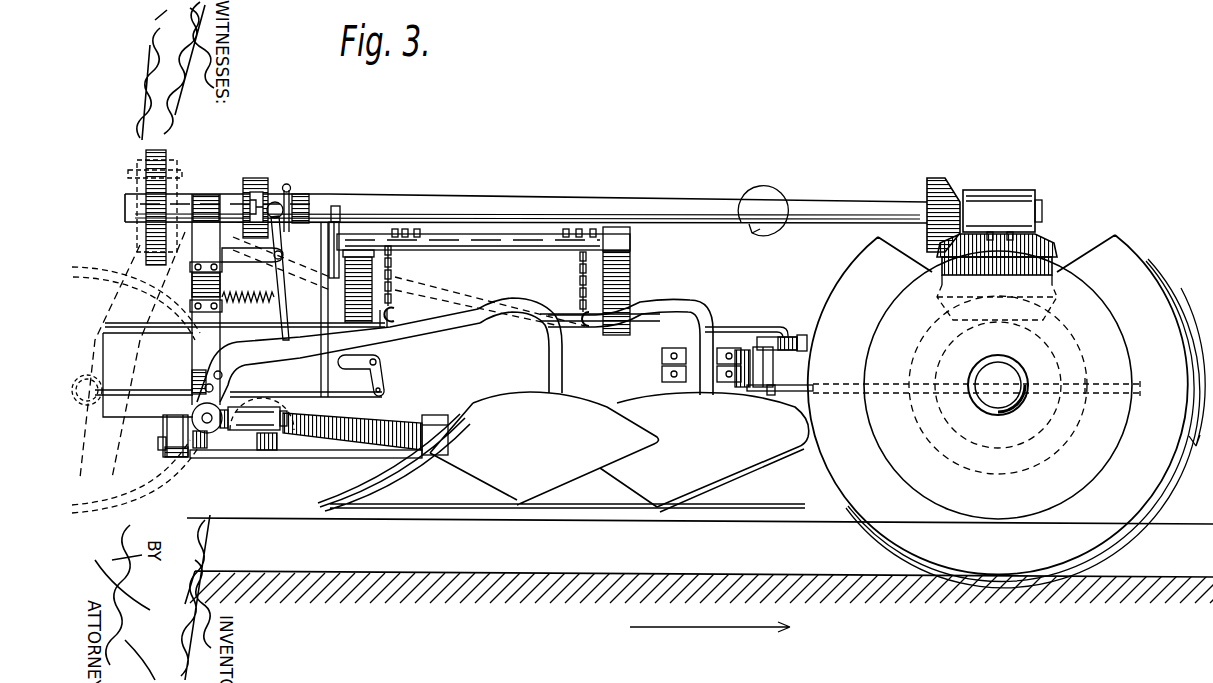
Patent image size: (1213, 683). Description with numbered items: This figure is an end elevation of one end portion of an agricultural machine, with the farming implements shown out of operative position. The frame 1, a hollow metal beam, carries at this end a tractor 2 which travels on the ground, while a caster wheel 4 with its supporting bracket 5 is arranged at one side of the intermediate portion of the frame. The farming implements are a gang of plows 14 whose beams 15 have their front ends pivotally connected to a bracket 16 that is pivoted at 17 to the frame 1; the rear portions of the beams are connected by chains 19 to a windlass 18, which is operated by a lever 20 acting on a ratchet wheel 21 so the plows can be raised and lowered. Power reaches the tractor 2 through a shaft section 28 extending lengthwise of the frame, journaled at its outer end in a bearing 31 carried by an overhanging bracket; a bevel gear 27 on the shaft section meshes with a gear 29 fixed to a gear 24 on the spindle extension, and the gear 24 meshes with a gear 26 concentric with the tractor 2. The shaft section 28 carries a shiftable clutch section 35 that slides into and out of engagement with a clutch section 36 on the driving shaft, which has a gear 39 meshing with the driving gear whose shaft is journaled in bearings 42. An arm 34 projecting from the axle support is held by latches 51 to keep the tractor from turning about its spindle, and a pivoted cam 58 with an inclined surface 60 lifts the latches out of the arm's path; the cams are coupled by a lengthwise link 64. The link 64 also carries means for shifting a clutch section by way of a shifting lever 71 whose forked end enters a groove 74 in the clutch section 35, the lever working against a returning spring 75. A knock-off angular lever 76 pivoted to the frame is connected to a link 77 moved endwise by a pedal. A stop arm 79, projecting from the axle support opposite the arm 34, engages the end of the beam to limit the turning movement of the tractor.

The frame 1 is at (336, 371).
The tractor 2 is at (1004, 411).
The caster wheel 4 is at (163, 492).
The supporting bracket 5 is at (137, 257).
The gang of plows 14 is at (648, 400).
The plow beams 15 is at (476, 320).
The bracket 16 is at (309, 455).
The pivot 17 is at (163, 457).
The windlass 18 is at (484, 250).
The chains 19 is at (395, 274).
The lever 20 is at (321, 371).
The ratchet wheel 21 is at (336, 228).
The gear 24 is at (1052, 303).
The gear 26 is at (1077, 364).
The bevel gear 27 is at (936, 178).
The shaft section 28 is at (678, 203).
The gear 29 is at (1050, 254).
The bearing 31 is at (1017, 190).
The arm 34 is at (798, 384).
The shiftable clutch section 35 is at (298, 194).
The clutch section 36 is at (249, 186).
The gear 39 is at (160, 160).
The bearings 42 is at (195, 283).
The latches 51 is at (773, 392).
The cam 58 is at (800, 335).
The inclined surface 60 is at (773, 337).
The link 64 is at (744, 328).
The shifting lever 71 is at (285, 288).
The groove 74 is at (276, 198).
The returning spring 75 is at (248, 285).
The angular lever 76 is at (384, 377).
The link 77 is at (342, 397).
The stop arm 79 is at (1104, 397).